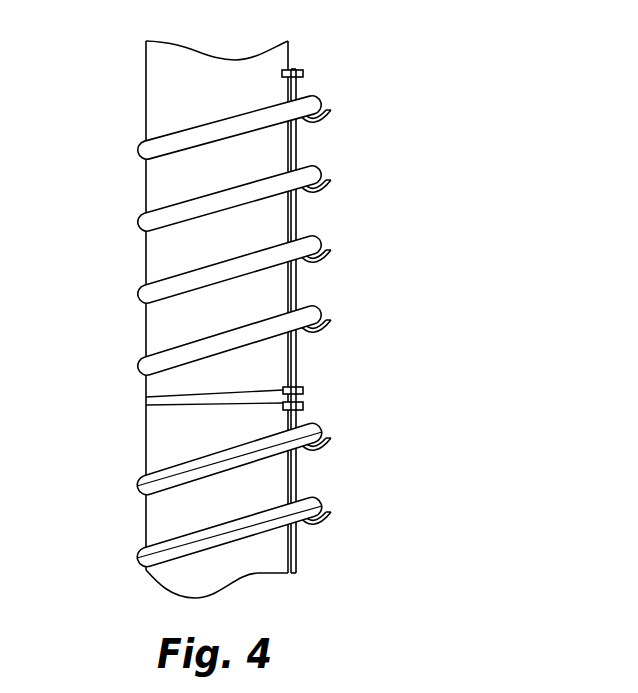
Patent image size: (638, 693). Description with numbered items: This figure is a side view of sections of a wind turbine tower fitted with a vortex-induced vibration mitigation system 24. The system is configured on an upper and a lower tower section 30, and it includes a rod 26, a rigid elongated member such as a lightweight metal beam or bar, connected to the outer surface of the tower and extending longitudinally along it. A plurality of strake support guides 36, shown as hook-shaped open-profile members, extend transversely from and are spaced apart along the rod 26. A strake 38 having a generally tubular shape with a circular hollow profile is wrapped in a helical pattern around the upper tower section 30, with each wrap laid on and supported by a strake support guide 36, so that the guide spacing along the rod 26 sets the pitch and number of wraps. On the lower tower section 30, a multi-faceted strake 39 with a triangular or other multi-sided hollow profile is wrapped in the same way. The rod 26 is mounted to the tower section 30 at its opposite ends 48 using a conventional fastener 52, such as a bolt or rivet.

The vortex-induced vibration mitigation system 24 is at (492, 156).
The rod 26 is at (298, 280).
The tower section 30 is at (160, 102).
The strake support guides 36 is at (323, 190).
The strake 38 is at (165, 163).
The multi-faceted strake 39 is at (165, 493).
The ends 48 is at (303, 74).
The fastener 52 is at (281, 77).